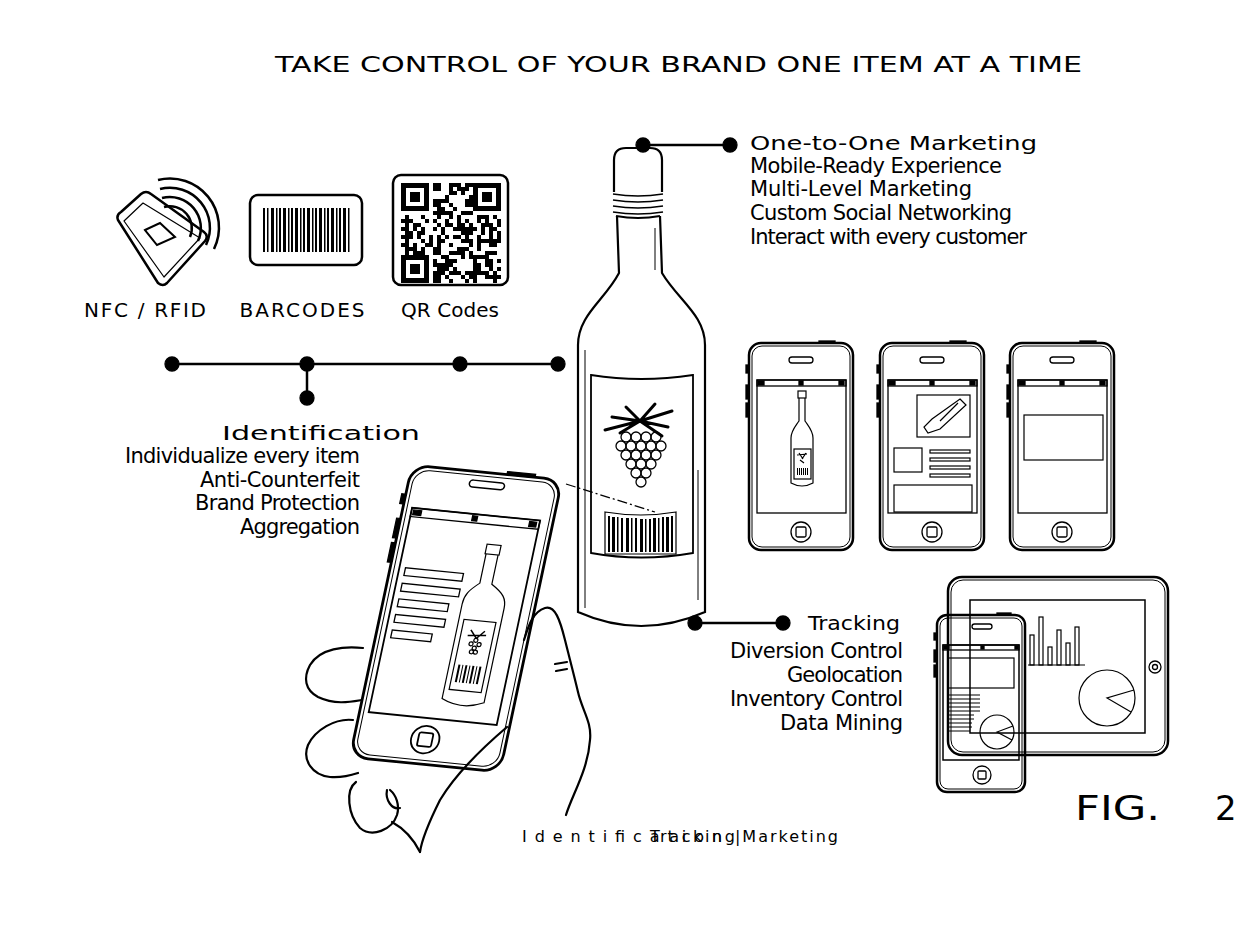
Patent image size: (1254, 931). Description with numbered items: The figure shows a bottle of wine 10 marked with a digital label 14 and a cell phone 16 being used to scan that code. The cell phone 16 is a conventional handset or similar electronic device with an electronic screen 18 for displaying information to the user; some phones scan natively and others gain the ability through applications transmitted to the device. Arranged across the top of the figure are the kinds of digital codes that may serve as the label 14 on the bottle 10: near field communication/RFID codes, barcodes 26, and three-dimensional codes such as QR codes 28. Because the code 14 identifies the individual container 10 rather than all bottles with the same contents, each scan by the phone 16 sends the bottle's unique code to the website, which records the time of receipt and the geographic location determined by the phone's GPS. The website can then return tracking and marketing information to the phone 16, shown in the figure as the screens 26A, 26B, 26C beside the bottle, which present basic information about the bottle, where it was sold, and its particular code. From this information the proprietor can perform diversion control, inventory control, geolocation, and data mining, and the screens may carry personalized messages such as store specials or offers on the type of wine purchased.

The bottle of wine 10 is at (652, 262).
The digital label 14 is at (676, 534).
The cell phone 16 is at (454, 587).
The electronic screen 18 is at (447, 622).
The barcodes 26 is at (313, 193).
The mobile device screen - identification 26A is at (800, 343).
The mobile device screen - marketing 26B is at (915, 343).
The mobile device screen - tracking 26C is at (1060, 343).
The QR codes 28 is at (458, 175).